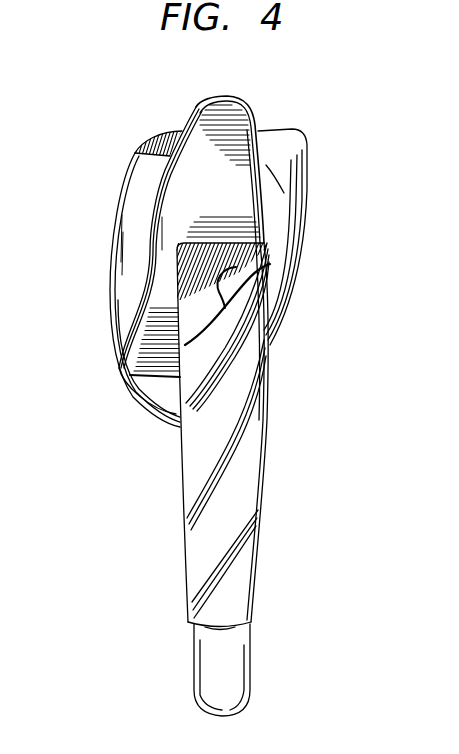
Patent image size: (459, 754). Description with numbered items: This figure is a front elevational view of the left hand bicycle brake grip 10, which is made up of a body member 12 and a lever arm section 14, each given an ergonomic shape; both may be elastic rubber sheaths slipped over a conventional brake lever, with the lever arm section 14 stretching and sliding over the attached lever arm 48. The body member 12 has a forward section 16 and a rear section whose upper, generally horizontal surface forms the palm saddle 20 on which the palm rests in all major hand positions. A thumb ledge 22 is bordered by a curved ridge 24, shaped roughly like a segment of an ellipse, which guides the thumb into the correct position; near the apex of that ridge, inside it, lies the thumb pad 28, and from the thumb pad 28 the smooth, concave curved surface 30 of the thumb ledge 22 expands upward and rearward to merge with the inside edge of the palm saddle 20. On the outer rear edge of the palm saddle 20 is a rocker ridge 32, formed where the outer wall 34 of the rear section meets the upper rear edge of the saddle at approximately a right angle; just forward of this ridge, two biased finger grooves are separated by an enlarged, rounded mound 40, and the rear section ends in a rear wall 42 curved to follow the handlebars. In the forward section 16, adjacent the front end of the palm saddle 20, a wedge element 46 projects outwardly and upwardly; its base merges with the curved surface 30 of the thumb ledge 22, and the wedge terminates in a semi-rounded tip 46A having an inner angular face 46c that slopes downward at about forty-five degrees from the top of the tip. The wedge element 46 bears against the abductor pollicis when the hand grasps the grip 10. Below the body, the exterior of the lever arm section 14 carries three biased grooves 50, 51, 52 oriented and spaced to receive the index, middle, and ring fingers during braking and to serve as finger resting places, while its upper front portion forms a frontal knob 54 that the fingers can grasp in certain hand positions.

The bicycle brake grip 10 is at (292, 431).
The body member 12 is at (126, 213).
The lever arm section 14 is at (175, 512).
The forward section 16 is at (177, 190).
The palm saddle 20 is at (150, 133).
The thumb ledge 22 is at (134, 298).
The curved ridge 24 is at (115, 323).
The thumb pad 28 is at (119, 368).
The curved surface 30 is at (127, 265).
The rocker ridge 32 is at (302, 135).
The outer wall 34 is at (298, 237).
The rounded mound 40 is at (290, 193).
The rear wall 42 is at (130, 403).
The wedge element 46 is at (162, 157).
The semi-rounded tip 46A is at (245, 107).
The inner angular face 46c is at (198, 110).
The lever arm 48 is at (212, 688).
The biased groove 50 is at (237, 378).
The biased groove 51 is at (237, 480).
The biased groove 52 is at (232, 577).
The frontal knob 54 is at (238, 268).